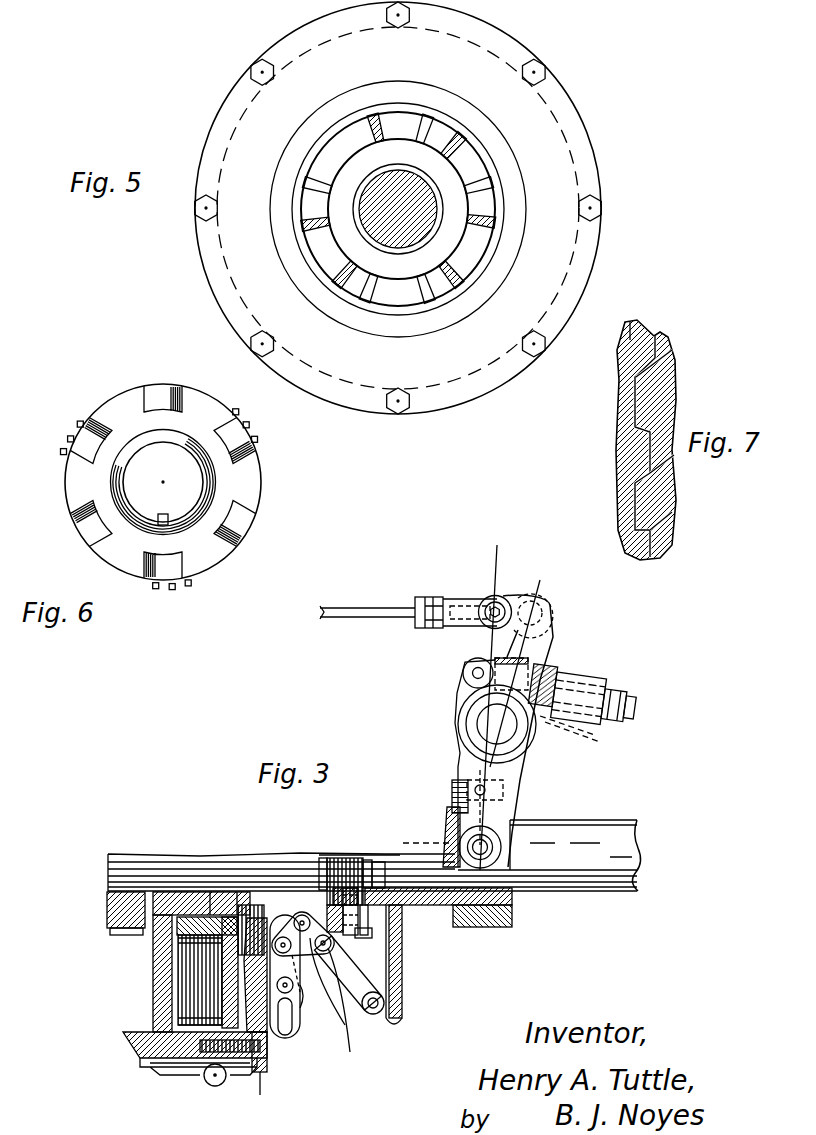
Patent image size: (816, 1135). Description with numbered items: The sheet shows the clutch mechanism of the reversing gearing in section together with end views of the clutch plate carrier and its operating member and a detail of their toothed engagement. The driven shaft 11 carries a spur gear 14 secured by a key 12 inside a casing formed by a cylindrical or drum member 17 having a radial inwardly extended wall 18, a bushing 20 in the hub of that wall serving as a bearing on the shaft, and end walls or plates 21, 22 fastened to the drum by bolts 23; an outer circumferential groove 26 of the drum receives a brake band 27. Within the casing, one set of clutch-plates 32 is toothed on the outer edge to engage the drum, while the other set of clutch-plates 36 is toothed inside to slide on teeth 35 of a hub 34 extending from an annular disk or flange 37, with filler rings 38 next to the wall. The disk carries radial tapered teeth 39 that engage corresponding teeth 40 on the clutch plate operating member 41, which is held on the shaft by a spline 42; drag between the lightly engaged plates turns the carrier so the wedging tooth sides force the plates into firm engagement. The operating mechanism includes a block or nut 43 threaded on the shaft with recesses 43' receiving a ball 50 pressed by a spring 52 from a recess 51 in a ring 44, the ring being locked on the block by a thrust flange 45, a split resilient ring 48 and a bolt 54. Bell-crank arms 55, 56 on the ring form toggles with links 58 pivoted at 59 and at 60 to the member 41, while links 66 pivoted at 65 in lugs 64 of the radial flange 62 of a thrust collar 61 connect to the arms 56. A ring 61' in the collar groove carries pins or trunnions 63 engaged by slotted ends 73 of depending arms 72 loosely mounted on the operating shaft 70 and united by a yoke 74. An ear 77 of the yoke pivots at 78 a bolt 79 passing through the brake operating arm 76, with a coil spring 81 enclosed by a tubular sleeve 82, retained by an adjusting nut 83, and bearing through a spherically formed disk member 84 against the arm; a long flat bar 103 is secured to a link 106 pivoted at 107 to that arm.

In FIG. 5, the driven shaft 11 is at (360, 228).
In FIG. 3, the driven shaft 11 is at (586, 822).
In FIG. 3, the key 12 is at (108, 899).
In FIG. 3, the spur gear 14 is at (112, 933).
In FIG. 3, the cylindrical or drum member 17 is at (128, 1042).
In FIG. 3, the radial inwardly extended wall 18 is at (158, 990).
In FIG. 3, the bushing 20 is at (170, 893).
In FIG. 3, the end wall or plate 21 is at (200, 898).
In FIG. 5, the end wall or plate 22 is at (572, 122).
In FIG. 3, the end wall or plate 22 is at (260, 1085).
In FIG. 5, the bolt 23 is at (540, 68).
In FIG. 3, the bolt 23 is at (270, 1057).
In FIG. 3, the outer circumferential groove 26 is at (150, 1065).
In FIG. 3, the brake band 27 is at (180, 1070).
In FIG. 3, the clutch-plate 32 is at (185, 955).
In FIG. 3, the hub 34 is at (210, 917).
In FIG. 3, the teeth 35 is at (232, 917).
In FIG. 3, the clutch-plate 36 is at (185, 972).
In FIG. 5, the annular disk or flange 37 is at (474, 167).
In FIG. 7, the annular disk or flange 37 is at (622, 422).
In FIG. 3, the annular disk or flange 37 is at (312, 1012).
In FIG. 3, the filler ring 38 is at (178, 1010).
In FIG. 5, the tapered teeth 39 is at (487, 203).
In FIG. 7, the tapered teeth 39 is at (647, 340).
In FIG. 3, the tapered teeth 39 is at (252, 905).
In FIG. 6, the teeth 40 is at (238, 532).
In FIG. 7, the teeth 40 is at (645, 400).
In FIG. 3, the teeth 40 is at (323, 870).
In FIG. 6, the clutch plate operating member 41 is at (248, 492).
In FIG. 7, the clutch plate operating member 41 is at (673, 418).
In FIG. 3, the clutch plate operating member 41 is at (365, 865).
In FIG. 6, the spline 42 is at (160, 520).
In FIG. 7, the spline 42 is at (672, 358).
In FIG. 3, the spline 42 is at (322, 856).
In FIG. 3, the block or nut 43 is at (374, 852).
In FIG. 3, the recess 43' is at (418, 824).
In FIG. 3, the ring 44 is at (368, 926).
In FIG. 3, the thrust flange 45 is at (345, 870).
In FIG. 3, the split resilient ring 48 is at (352, 888).
In FIG. 3, the ball 50 is at (340, 935).
In FIG. 3, the recess 51 is at (372, 935).
In FIG. 3, the spring 52 is at (326, 950).
In FIG. 3, the bolt 54 is at (402, 945).
In FIG. 3, the arm 55 is at (318, 952).
In FIG. 3, the arm 56 is at (300, 1002).
In FIG. 3, the link 58 is at (283, 958).
In FIG. 3, the pivot 59 is at (345, 1005).
In FIG. 3, the pivot 60 is at (150, 983).
In FIG. 3, the thrust collar 61 is at (445, 823).
In FIG. 3, the ring 61' is at (489, 932).
In FIG. 3, the radial flange 62 is at (402, 975).
In FIG. 3, the pins or trunnions 63 is at (490, 840).
In FIG. 3, the lug 64 is at (384, 1012).
In FIG. 3, the pivot 65 is at (380, 1020).
In FIG. 3, the link 66 is at (348, 1030).
In FIG. 3, the operating shaft 70 is at (484, 731).
In FIG. 3, the depending arm 72 is at (510, 773).
In FIG. 3, the slotted end 73 is at (512, 859).
In FIG. 3, the yoke 74 is at (458, 718).
In FIG. 3, the brake operating arm 76 is at (512, 645).
In FIG. 3, the ear 77 is at (460, 690).
In FIG. 3, the pivot 78 is at (463, 671).
In FIG. 3, the bolt 79 is at (637, 706).
In FIG. 3, the coil spring 81 is at (552, 720).
In FIG. 3, the tubular sleeve 82 is at (592, 683).
In FIG. 3, the adjusting nut 83 is at (622, 696).
In FIG. 3, the spherically formed disk member 84 is at (540, 675).
In FIG. 3, the long flat bar 103 is at (346, 607).
In FIG. 3, the link 106 is at (433, 597).
In FIG. 3, the pivot 107 is at (498, 605).